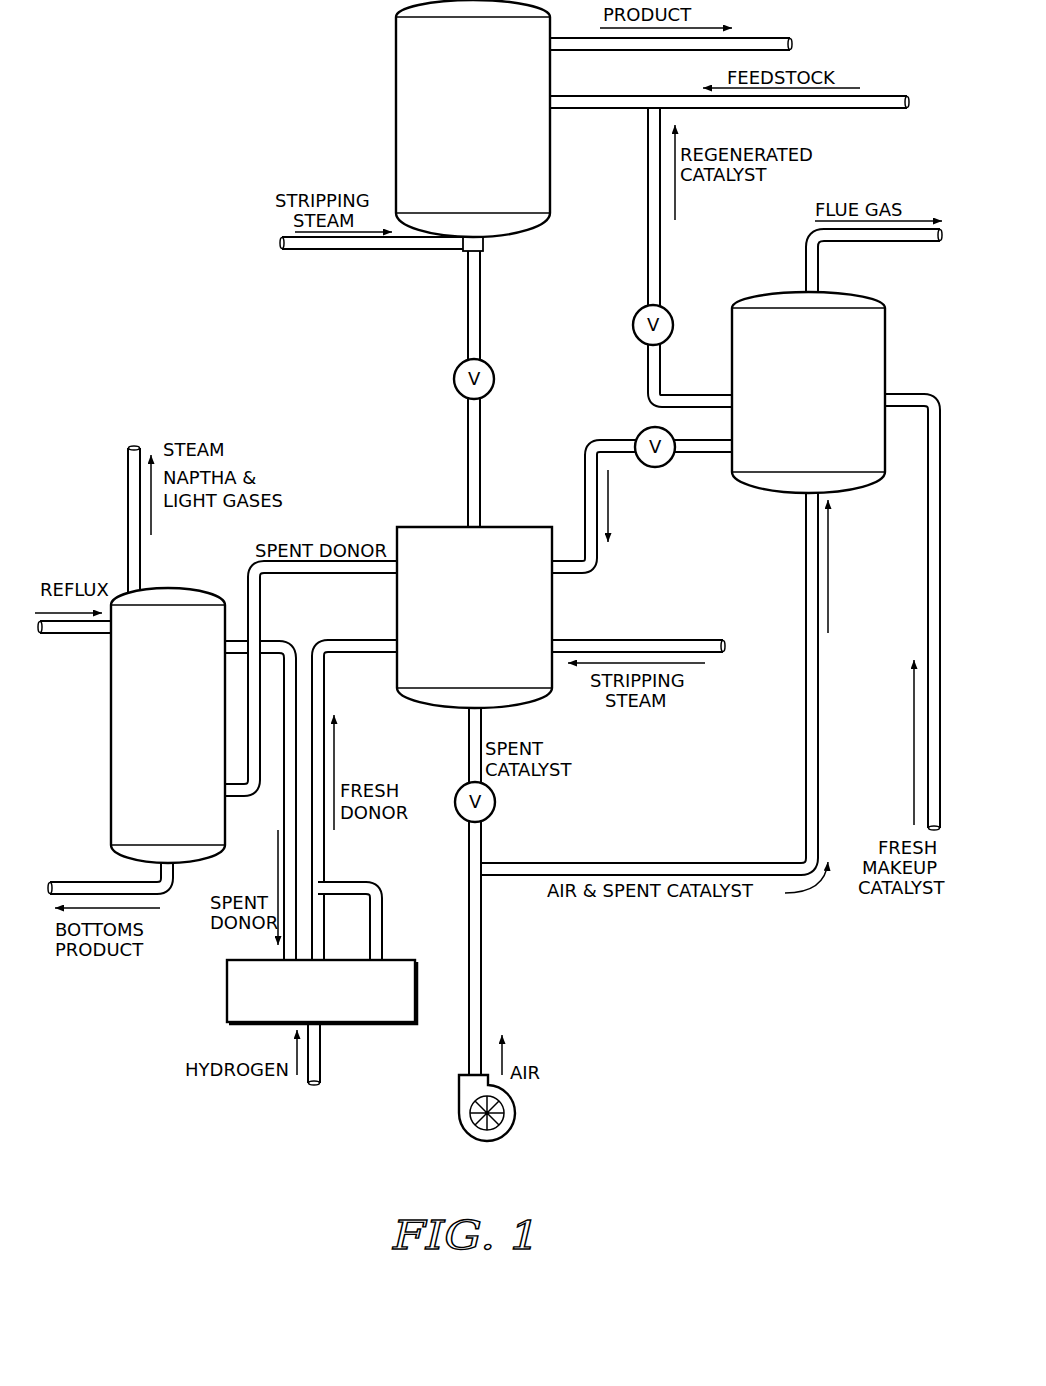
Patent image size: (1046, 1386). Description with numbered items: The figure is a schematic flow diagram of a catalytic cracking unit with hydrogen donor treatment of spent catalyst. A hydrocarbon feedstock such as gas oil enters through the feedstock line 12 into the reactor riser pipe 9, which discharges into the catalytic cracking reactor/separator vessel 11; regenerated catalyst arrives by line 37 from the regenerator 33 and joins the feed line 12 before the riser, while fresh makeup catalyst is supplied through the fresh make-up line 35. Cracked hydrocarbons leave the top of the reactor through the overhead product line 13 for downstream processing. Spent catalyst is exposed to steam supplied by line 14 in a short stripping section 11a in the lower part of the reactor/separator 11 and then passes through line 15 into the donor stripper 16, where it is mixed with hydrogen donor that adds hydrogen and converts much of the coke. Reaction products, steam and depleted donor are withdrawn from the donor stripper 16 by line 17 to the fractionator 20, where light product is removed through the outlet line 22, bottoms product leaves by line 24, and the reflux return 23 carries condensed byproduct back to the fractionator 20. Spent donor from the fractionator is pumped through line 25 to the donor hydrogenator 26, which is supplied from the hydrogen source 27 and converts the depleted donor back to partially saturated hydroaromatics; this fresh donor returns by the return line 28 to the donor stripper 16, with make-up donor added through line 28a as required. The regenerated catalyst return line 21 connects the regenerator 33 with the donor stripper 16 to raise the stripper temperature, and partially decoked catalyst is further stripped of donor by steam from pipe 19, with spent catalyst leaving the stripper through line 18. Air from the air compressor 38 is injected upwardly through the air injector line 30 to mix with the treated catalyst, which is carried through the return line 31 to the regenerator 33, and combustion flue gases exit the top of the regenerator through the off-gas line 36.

The reactor riser pipe 9 is at (602, 75).
The catalytic cracking reactor/separator vessel 11 is at (395, 86).
The stripping section 11a is at (487, 248).
The feedstock line 12 is at (862, 109).
The overhead product line 13 is at (773, 37).
The stripping gas line 14 is at (324, 249).
The spent catalyst line 15 is at (481, 325).
The donor stripper 16 is at (521, 527).
The donor stripper outlet line 17 is at (324, 573).
The spent catalyst line 18 is at (468, 740).
The steam pipe 19 is at (700, 641).
The fractionator 20 is at (111, 753).
The regenerated catalyst return line 21 is at (642, 506).
The outlet line 22 is at (140, 568).
The reflux return 23 is at (66, 633).
The bottoms product line 24 is at (83, 882).
The spent donor line 25 is at (283, 808).
The donor hydrogenator 26 is at (415, 980).
The hydrogen source 27 is at (320, 1060).
The return line 28 is at (326, 683).
The make-up donor line 28a is at (384, 940).
The air injector line 30 is at (482, 978).
The return line 31 is at (700, 861).
The regenerator 33 is at (886, 330).
The fresh make-up line 35 is at (928, 604).
The off-gas line 36 is at (903, 242).
The regenerated catalyst line 37 is at (661, 260).
The air compressor 38 is at (513, 1110).